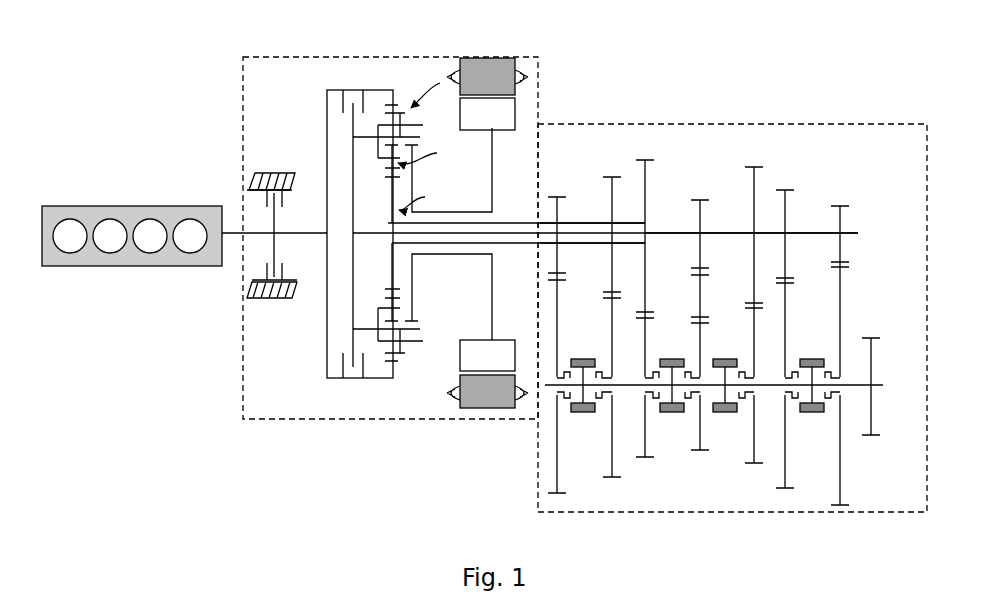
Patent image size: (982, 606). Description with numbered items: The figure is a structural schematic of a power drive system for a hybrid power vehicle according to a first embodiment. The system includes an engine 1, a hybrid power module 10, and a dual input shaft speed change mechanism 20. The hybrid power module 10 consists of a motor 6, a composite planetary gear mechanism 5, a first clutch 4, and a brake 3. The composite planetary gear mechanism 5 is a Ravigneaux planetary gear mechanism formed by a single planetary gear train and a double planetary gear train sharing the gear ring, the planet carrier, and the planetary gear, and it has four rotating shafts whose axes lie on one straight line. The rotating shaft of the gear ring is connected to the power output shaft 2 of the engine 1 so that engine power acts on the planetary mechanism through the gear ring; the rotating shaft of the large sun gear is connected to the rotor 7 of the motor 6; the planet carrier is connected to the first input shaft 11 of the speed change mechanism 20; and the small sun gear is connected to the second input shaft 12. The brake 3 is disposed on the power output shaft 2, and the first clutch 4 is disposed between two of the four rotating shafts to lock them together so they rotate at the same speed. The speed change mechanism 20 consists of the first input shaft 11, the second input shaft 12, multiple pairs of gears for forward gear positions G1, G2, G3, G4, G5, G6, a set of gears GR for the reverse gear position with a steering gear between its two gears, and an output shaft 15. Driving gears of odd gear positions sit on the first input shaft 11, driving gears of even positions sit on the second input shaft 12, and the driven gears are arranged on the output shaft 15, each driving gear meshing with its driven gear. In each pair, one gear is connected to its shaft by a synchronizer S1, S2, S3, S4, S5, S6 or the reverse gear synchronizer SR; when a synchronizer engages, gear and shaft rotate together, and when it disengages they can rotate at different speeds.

The engine 1 is at (186, 204).
The power output shaft 2 is at (237, 228).
The brake 3 is at (255, 172).
The first clutch 4 is at (352, 87).
The composite planetary gear mechanism 5 is at (391, 87).
The motor 6 is at (474, 55).
The rotor 7 is at (522, 109).
The hybrid power module 10 is at (310, 423).
The first input shaft 11 is at (677, 230).
The second input shaft 12 is at (594, 220).
The output shaft 15 is at (881, 382).
The dual input shaft speed change mechanism 20 is at (535, 451).
The gear for forward gear position G1 is at (842, 339).
The gear for forward gear position G2 is at (558, 334).
The gear for forward gear position G3 is at (783, 324).
The gear for forward gear position G4 is at (612, 314).
The gear for forward gear position G5 is at (755, 303).
The gear for forward gear position G6 is at (645, 297).
The gear for the reverse gear position GR is at (699, 312).
The synchronizer S1 is at (828, 404).
The synchronizer S2 is at (569, 404).
The synchronizer S3 is at (798, 404).
The synchronizer S4 is at (602, 404).
The synchronizer S5 is at (743, 404).
The synchronizer S6 is at (657, 404).
The reverse gear synchronizer SR is at (689, 404).